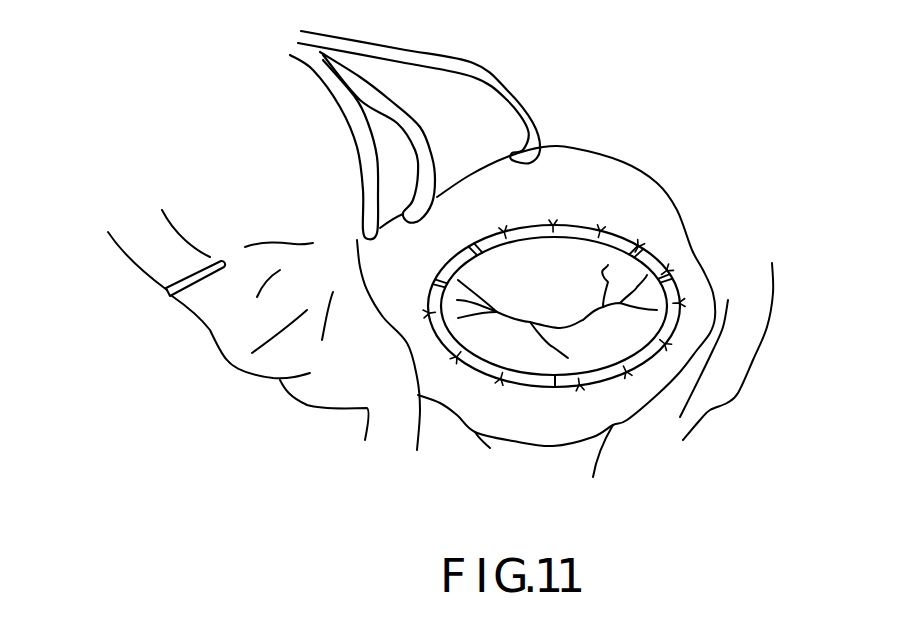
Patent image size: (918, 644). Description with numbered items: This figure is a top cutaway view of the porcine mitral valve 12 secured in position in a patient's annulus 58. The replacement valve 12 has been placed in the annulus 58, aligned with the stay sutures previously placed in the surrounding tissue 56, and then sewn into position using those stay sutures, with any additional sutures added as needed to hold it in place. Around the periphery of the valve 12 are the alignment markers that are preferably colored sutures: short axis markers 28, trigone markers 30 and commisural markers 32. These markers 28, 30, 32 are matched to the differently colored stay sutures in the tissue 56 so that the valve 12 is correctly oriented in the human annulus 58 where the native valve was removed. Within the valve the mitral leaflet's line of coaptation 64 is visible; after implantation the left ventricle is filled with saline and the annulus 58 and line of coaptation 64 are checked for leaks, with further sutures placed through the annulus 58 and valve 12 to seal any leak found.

The porcine mitral valve 12 is at (523, 420).
The short axis markers 28 is at (553, 233).
The trigone markers 30 is at (470, 237).
The commisural markers 32 is at (432, 290).
The tissue 56 is at (395, 308).
The annulus 58 is at (620, 413).
The line of coaptation 64 is at (503, 318).